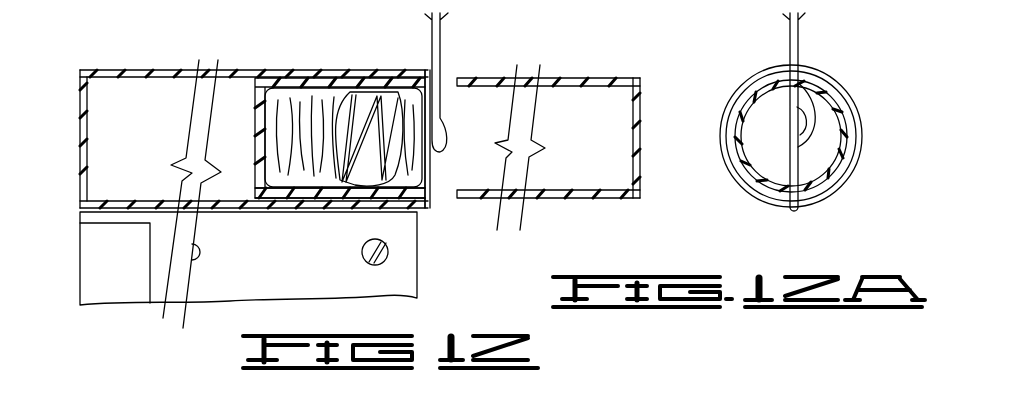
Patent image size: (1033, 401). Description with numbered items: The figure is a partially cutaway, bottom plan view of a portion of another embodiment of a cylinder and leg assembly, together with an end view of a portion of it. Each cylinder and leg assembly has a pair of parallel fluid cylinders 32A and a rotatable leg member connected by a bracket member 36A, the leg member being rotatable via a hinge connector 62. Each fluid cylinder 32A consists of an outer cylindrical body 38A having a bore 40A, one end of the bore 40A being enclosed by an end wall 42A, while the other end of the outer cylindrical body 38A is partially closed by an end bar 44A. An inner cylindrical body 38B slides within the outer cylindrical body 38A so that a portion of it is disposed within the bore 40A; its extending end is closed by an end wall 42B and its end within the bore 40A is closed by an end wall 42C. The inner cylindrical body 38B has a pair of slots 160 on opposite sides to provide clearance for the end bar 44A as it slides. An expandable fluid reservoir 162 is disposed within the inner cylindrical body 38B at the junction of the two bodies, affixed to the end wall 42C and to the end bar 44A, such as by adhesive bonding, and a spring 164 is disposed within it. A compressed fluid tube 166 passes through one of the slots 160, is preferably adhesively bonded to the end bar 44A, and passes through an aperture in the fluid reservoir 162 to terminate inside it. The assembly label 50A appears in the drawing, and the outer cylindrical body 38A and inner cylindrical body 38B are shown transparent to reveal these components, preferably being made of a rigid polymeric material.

In FIG. 12, the fluid cylinder 32A is at (166, 106).
In FIG. 12A, the fluid cylinder 32A is at (825, 67).
In FIG. 12, the outer cylindrical body 38A is at (247, 70).
In FIG. 12A, the outer cylindrical body 38A is at (768, 70).
In FIG. 12, the inner cylindrical body 38B is at (583, 78).
In FIG. 12, the end wall 42A is at (80, 138).
In FIG. 12, the end wall 42B is at (641, 131).
In FIG. 12, the end wall 42C is at (257, 128).
In FIG. 12, the end bar 44A is at (432, 160).
In FIG. 12A, the end bar 44A is at (797, 163).
In FIG. 12, the bore 40A is at (245, 170).
In FIG. 12, the bracket member 36A is at (313, 274).
In FIG. 12, the hinge connector 62 is at (131, 267).
In FIG. 12, the expandable fluid reservoir 162 is at (313, 108).
In FIG. 12, the spring 164 is at (376, 172).
In FIG. 12, the compressed fluid tube 166 is at (441, 46).
In FIG. 12A, the compressed fluid tube 166 is at (798, 44).
In FIG. 12A, the slots 160 is at (790, 82).
In FIG. 12, the assembly 50A is at (518, 44).